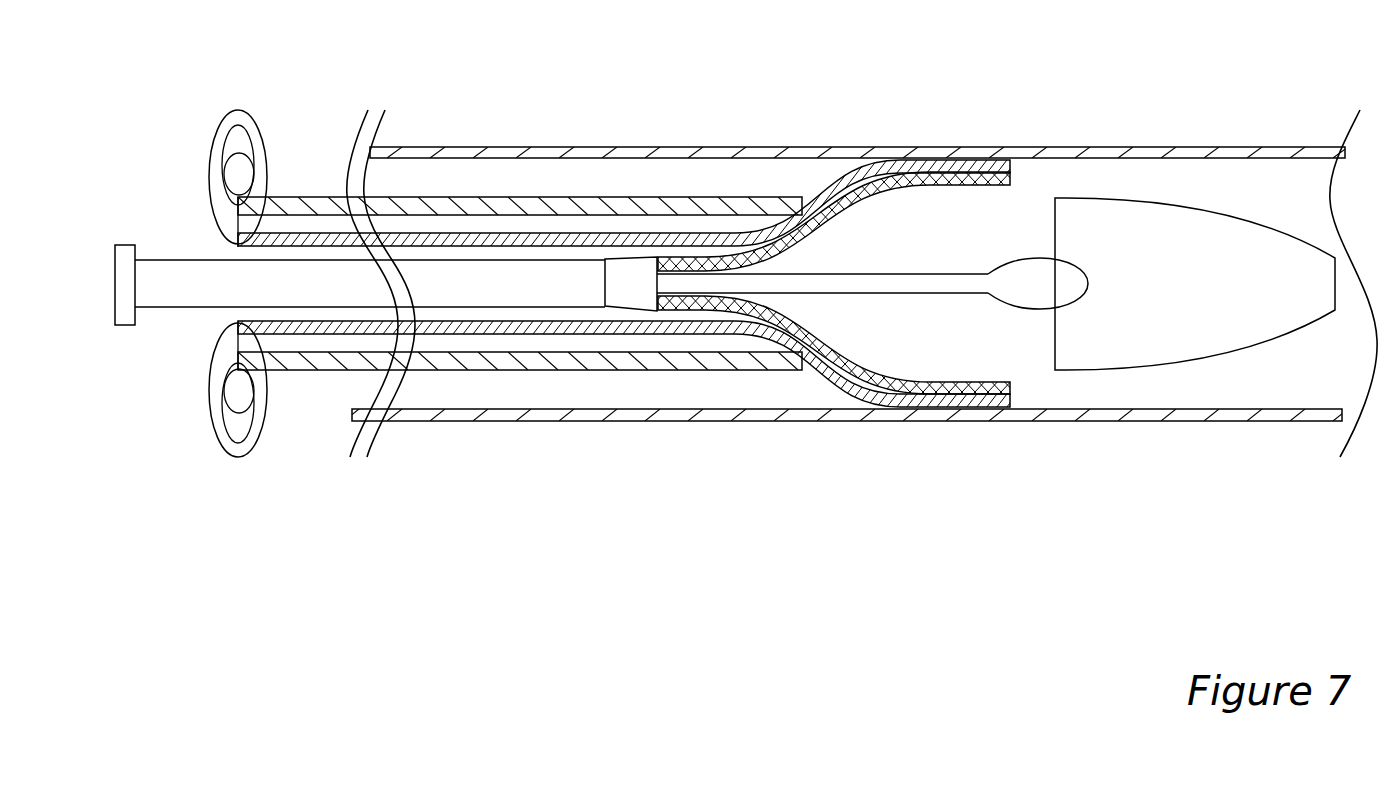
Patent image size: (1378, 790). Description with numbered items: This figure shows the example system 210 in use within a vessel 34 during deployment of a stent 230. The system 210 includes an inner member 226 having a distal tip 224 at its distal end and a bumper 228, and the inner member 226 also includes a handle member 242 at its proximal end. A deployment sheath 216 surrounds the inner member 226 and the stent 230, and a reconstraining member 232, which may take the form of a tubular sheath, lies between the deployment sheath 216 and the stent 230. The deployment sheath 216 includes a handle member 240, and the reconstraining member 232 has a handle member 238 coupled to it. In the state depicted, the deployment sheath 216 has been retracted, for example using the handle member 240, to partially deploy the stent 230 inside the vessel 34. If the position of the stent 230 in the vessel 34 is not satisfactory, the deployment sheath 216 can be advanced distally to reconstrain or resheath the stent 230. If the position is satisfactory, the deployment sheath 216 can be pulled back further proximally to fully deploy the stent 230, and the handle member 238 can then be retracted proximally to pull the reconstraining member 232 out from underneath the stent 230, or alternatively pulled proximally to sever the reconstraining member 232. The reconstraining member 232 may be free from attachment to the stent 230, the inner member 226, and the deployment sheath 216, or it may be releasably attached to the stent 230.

The system 210 is at (537, 93).
The vessel 34 is at (1115, 157).
The handle member 242 is at (125, 249).
The bumper 228 is at (641, 263).
The handle member 240 is at (237, 116).
The handle member 238 is at (211, 204).
The deployment sheath 216 is at (495, 198).
The reconstraining member 232 is at (876, 175).
The inner member 226 is at (732, 266).
The stent 230 is at (727, 303).
The distal tip 224 is at (1177, 222).